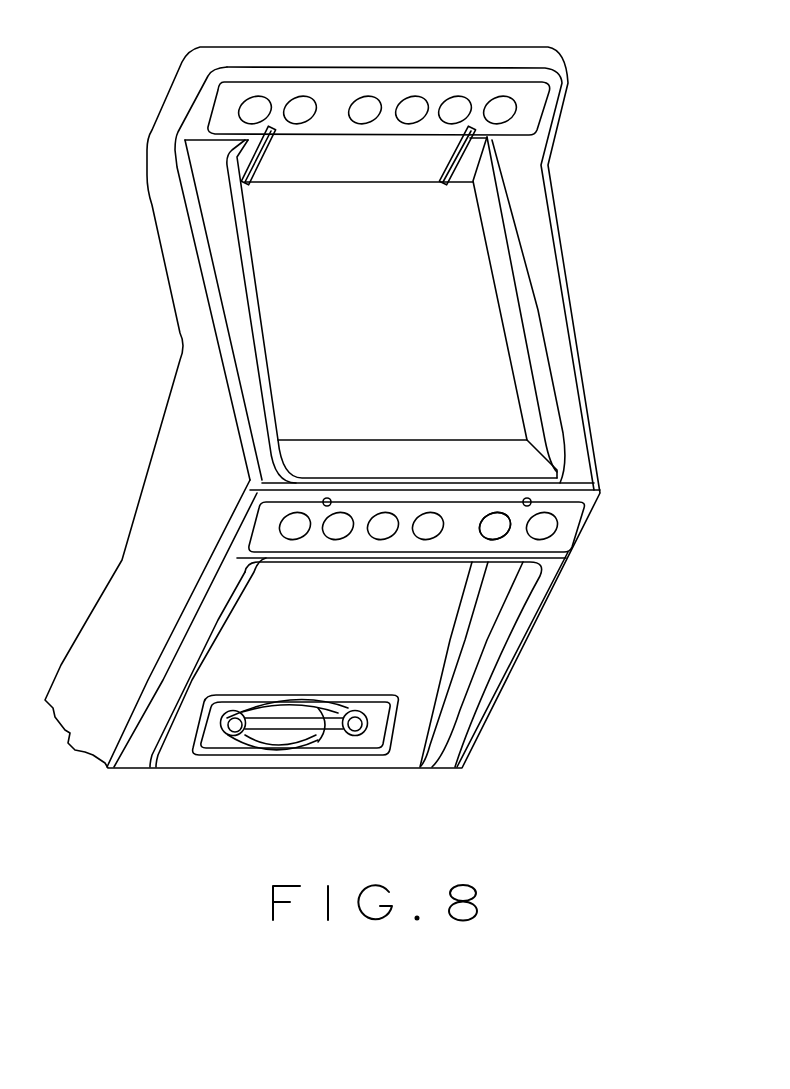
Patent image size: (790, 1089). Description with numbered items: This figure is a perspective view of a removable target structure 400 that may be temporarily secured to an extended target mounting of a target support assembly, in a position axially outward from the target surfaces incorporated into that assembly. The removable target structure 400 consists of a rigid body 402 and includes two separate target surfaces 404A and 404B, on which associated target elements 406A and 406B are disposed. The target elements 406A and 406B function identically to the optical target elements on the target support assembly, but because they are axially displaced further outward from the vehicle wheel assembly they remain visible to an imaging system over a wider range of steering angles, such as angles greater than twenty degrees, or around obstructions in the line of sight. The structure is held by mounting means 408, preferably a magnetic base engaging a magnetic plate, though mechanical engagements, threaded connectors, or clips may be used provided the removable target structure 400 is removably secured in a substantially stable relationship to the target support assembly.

The removable target structure 400 is at (386, 431).
The rigid body 402 is at (587, 472).
The target surface 404A is at (560, 538).
The target surface 404B is at (526, 107).
The target element 406A is at (495, 532).
The target element 406B is at (503, 110).
The mounting means 408 is at (287, 740).